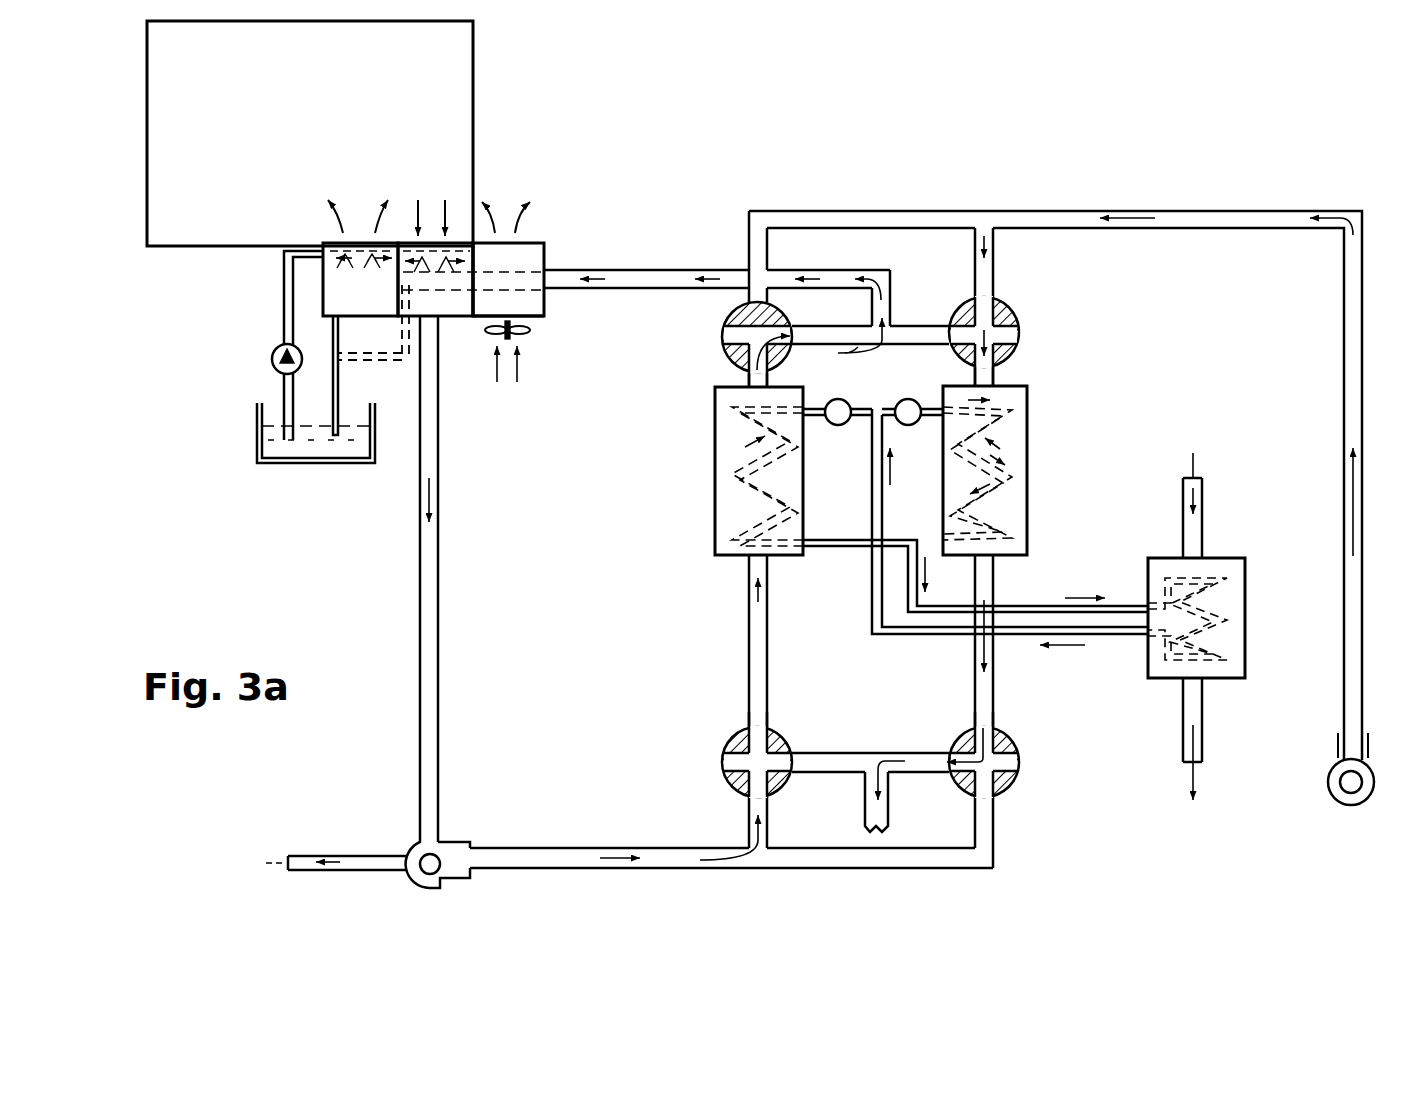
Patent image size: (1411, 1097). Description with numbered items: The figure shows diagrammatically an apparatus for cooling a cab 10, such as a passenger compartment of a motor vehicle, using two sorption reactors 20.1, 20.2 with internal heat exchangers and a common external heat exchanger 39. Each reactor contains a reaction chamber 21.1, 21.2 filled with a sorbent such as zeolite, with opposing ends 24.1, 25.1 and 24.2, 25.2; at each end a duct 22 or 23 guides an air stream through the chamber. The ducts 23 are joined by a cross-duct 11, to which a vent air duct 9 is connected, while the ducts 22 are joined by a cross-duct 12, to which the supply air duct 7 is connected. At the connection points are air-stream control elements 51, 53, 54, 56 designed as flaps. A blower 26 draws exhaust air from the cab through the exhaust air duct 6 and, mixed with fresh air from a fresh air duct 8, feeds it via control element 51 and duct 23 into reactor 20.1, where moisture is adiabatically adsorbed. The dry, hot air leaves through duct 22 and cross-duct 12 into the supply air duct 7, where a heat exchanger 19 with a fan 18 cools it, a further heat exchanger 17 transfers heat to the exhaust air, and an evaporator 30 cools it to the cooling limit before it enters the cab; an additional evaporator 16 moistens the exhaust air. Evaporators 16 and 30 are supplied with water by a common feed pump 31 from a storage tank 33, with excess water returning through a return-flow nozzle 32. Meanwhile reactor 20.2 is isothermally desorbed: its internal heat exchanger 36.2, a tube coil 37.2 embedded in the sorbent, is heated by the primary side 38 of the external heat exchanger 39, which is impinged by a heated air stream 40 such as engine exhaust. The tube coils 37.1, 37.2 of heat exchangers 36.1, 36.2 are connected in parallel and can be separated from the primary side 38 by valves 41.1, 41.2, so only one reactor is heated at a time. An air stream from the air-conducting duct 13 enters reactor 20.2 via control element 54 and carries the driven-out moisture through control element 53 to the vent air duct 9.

The exhaust air duct 6 is at (439, 598).
The supply air duct 7 is at (640, 270).
The fresh air duct 8 is at (360, 872).
The vent air duct 9 is at (889, 808).
The cab 10 is at (288, 137).
The cross-duct 11 is at (822, 773).
The cross-duct 12 is at (808, 340).
The air-conducting duct 13 is at (1040, 214).
The evaporator 16 is at (448, 262).
The heat exchanger 17 is at (459, 304).
The fan 18 is at (522, 342).
The heat exchanger 19 is at (545, 303).
The sorption reactor 20.1 is at (714, 432).
The sorption reactor 20.2 is at (1030, 431).
The reaction chamber 21.1 is at (735, 535).
The reaction chamber 21.2 is at (1015, 528).
The duct 22 is at (746, 376).
The duct 23 is at (748, 724).
The end of reaction chamber 24.1 is at (720, 395).
The end of reaction chamber 24.2 is at (1022, 388).
The end of reaction chamber 25.1 is at (735, 558).
The end of reaction chamber 25.2 is at (1015, 558).
The blower 26 is at (437, 886).
The evaporator 30 is at (378, 314).
The feed pump 31 is at (272, 360).
The return-flow nozzle 32 is at (340, 383).
The storage tank 33 is at (257, 430).
The internal heat exchanger 36.1 is at (760, 446).
The internal heat exchanger 36.2 is at (1005, 447).
The tube coil 37.1 is at (750, 492).
The tube coil 37.2 is at (1010, 490).
The primary side of external heat exchanger 38 is at (1098, 634).
The external heat exchanger 39 is at (1228, 672).
The heated air stream 40 is at (1194, 456).
The valve 41.1 is at (838, 399).
The valve 41.2 is at (908, 399).
The air-stream control element 51 is at (722, 773).
The air-stream control element 53 is at (1019, 770).
The air-stream control element 54 is at (1021, 325).
The air-stream control element 56 is at (722, 340).